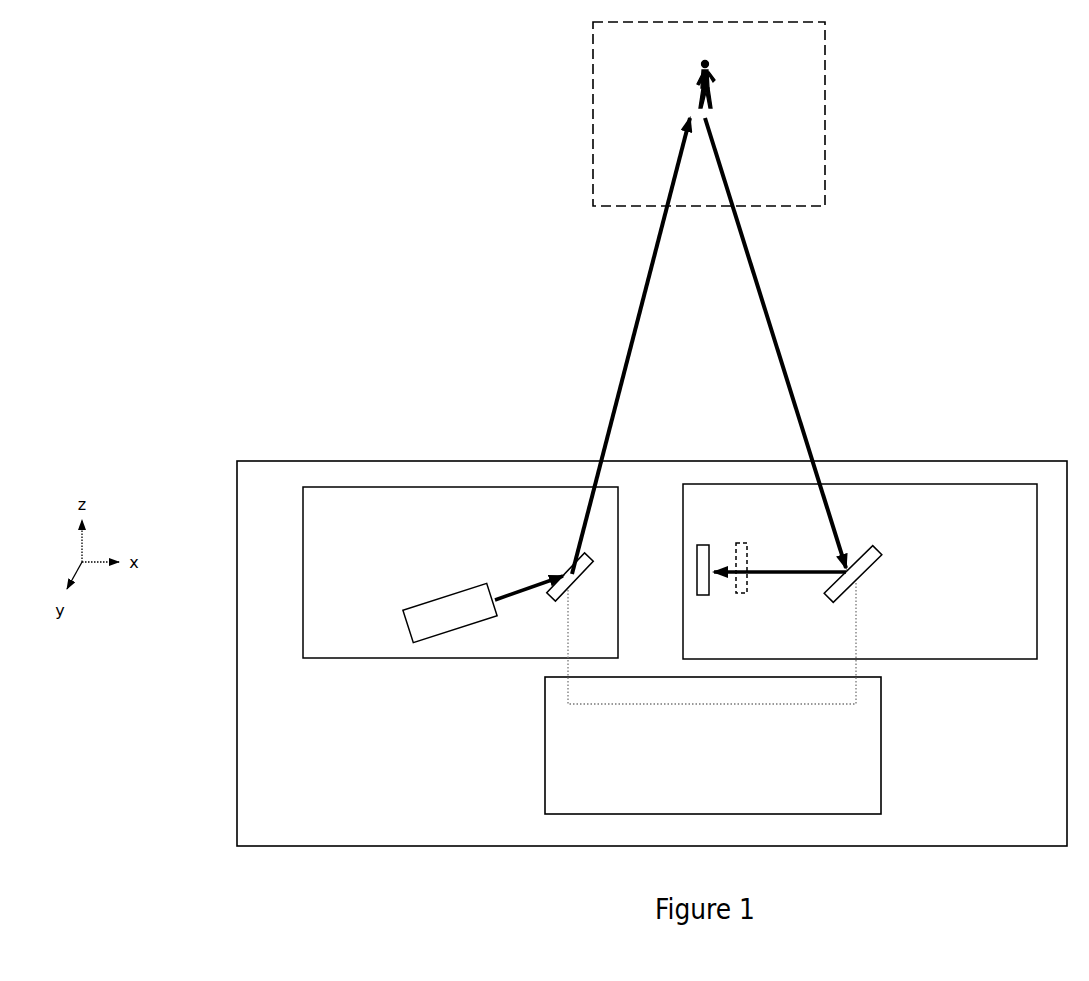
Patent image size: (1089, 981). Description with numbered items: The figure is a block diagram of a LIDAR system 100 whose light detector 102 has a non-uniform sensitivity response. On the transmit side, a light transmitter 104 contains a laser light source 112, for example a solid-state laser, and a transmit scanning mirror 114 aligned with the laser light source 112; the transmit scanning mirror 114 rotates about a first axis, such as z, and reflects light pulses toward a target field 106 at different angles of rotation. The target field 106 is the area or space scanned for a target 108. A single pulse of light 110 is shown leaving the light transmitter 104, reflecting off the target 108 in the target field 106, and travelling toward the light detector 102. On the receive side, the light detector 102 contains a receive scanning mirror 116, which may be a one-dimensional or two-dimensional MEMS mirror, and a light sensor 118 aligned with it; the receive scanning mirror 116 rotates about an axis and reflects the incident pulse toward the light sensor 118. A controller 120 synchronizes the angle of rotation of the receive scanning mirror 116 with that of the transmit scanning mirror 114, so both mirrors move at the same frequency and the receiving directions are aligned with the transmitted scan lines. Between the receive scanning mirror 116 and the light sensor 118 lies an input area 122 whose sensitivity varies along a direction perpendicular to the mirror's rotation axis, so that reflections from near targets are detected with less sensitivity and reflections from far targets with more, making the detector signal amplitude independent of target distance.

The LIDAR system 100 is at (278, 491).
The light detector 102 is at (914, 544).
The light transmitter 104 is at (414, 547).
The target field 106 is at (816, 48).
The target 108 is at (682, 69).
The pulse of light 110 is at (619, 329).
The laser light source 112 is at (405, 627).
The transmit scanning mirror 114 is at (584, 576).
The receive scanning mirror 116 is at (873, 560).
The light sensor 118 is at (704, 597).
The controller 120 is at (692, 795).
The input area 122 is at (741, 541).